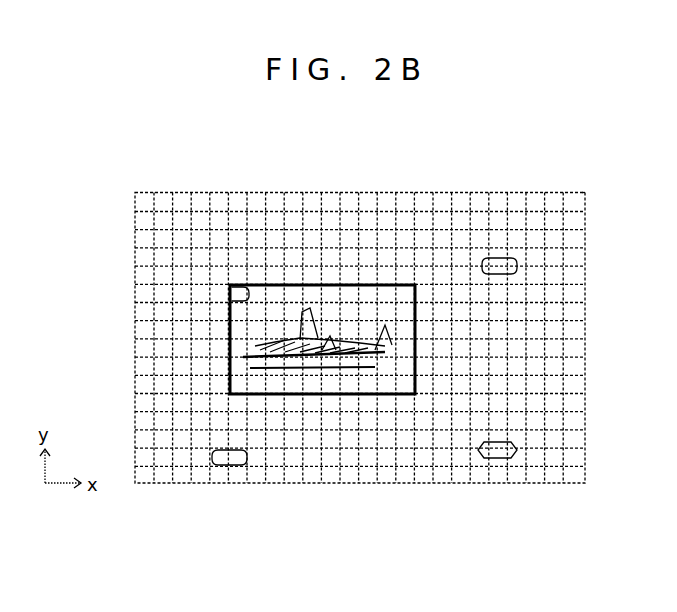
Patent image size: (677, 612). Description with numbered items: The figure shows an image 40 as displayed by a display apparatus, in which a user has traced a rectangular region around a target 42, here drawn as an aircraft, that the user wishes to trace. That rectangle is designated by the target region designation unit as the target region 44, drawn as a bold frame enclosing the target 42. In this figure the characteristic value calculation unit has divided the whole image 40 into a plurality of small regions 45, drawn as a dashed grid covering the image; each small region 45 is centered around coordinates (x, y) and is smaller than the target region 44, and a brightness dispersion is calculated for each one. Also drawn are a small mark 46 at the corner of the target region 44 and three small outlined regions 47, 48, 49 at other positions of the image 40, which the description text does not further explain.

The image 40 is at (507, 178).
The target 42 is at (240, 357).
The target region 44 is at (328, 284).
The small region 45 is at (585, 192).
The frame corner mark 46 is at (230, 292).
The marker 47 is at (516, 262).
The marker 48 is at (212, 458).
The marker 49 is at (518, 446).